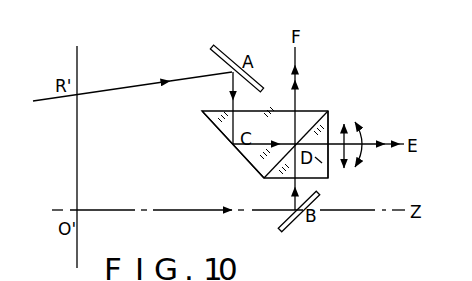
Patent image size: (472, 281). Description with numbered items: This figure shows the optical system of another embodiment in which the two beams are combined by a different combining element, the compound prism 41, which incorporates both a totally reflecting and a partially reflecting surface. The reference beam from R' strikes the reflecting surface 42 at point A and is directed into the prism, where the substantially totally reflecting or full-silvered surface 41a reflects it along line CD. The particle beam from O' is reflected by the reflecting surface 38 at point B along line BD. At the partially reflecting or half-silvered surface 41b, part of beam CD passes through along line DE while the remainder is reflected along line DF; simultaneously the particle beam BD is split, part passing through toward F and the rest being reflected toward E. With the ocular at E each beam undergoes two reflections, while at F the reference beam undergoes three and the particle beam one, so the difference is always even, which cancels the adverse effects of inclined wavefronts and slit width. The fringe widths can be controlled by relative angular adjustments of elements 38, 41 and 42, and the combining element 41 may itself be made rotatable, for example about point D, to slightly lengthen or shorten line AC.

The reflecting surface 42 is at (212, 48).
The reflecting surface 38 is at (283, 231).
The compound prism 41 is at (256, 131).
The substantially totally reflecting surface 41a is at (218, 128).
The partially reflecting surface 41b is at (319, 131).